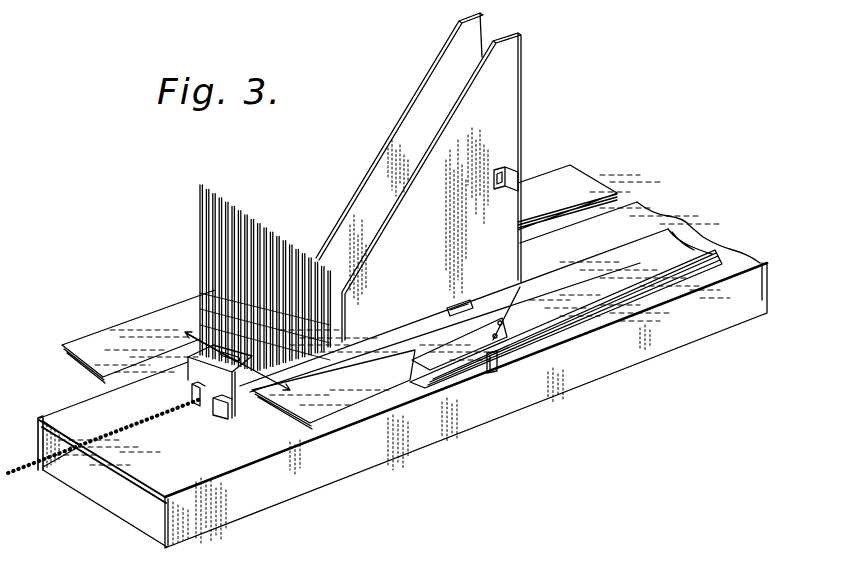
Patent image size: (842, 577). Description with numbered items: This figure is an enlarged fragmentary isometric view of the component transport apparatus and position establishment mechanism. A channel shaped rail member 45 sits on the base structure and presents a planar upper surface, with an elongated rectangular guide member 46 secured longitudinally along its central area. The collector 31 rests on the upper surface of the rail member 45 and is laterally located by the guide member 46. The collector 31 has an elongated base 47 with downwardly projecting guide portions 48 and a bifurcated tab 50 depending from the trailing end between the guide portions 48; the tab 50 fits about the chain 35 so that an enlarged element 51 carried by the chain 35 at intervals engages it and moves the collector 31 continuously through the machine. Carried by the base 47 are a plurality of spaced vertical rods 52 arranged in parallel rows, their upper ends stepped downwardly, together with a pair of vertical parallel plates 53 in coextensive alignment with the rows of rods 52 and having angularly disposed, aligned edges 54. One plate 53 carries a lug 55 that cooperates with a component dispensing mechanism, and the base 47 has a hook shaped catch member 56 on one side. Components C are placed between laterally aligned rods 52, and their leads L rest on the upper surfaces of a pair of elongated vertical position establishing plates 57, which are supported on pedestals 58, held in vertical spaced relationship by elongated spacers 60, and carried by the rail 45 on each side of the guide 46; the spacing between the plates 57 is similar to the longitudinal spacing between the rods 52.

The collector 31 is at (386, 108).
The chain 35 is at (110, 431).
The channel shaped rail member 45 is at (147, 485).
The guide member 46 is at (114, 461).
The base 47 is at (353, 346).
The guide portions 48 is at (257, 408).
The bifurcated tab 50 is at (217, 404).
The enlarged element 51 is at (208, 404).
The rods 52 is at (248, 208).
The plates 53 is at (413, 240).
The angularly disposed edges 54 is at (445, 115).
The lug 55 is at (514, 176).
The hook shaped catch member 56 is at (458, 302).
The position establishing plates 57 is at (152, 332).
The pedestals 58 is at (490, 374).
The spacers 60 is at (465, 342).
The components C is at (195, 371).
The leads L is at (249, 362).